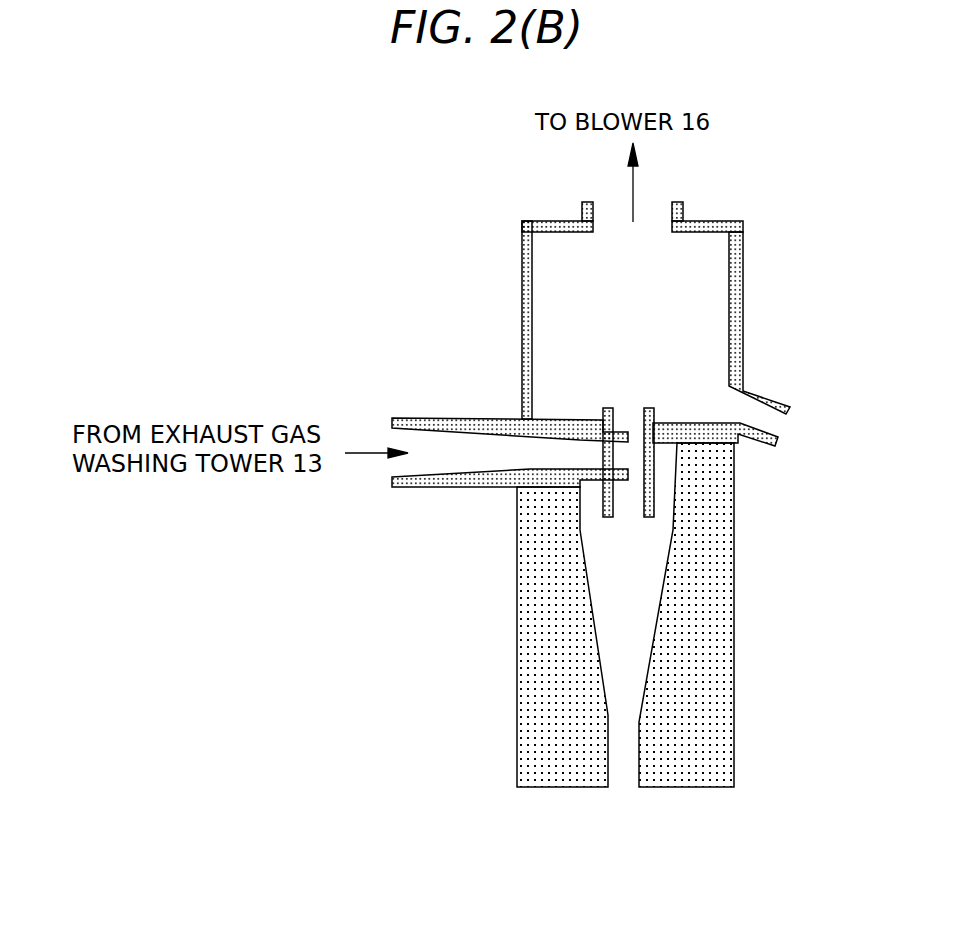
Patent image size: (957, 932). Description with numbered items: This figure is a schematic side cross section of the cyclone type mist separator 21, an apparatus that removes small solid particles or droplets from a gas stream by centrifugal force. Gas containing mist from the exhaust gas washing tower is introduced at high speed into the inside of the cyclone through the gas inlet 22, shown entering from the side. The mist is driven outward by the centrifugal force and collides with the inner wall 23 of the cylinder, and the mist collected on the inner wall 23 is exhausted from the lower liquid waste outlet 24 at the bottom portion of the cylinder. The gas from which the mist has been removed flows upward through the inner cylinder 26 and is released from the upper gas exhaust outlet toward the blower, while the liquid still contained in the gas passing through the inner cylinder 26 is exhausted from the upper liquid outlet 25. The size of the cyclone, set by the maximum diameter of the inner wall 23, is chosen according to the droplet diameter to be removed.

The cyclone type mist separator 21 is at (735, 348).
The gas inlet 22 is at (418, 490).
The inner wall 23 is at (663, 618).
The lower liquid waste outlet 24 is at (623, 780).
The upper liquid outlet 25 is at (772, 446).
The inner cylinder 26 is at (653, 408).